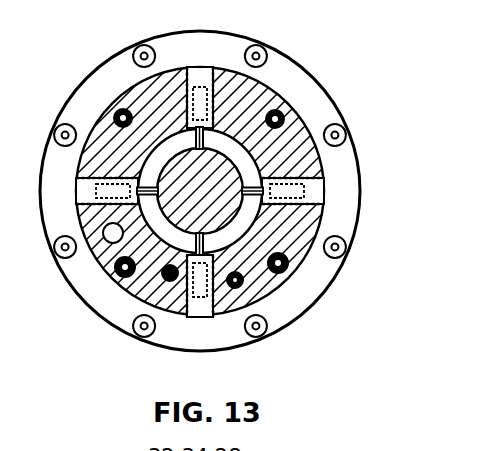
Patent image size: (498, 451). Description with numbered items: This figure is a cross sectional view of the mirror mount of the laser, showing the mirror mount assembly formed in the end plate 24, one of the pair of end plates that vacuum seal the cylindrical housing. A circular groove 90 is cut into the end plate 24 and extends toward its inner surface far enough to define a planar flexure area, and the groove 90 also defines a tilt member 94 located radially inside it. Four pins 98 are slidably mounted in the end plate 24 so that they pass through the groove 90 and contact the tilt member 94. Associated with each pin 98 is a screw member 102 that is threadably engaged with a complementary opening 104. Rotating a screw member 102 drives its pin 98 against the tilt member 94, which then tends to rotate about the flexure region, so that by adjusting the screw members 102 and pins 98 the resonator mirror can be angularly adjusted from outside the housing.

The end plate 24 is at (223, 347).
The circular groove 90 is at (236, 143).
The tilt member 94 is at (250, 227).
The pins 98 is at (154, 180).
The screw member 102 is at (326, 196).
The complementary opening 104 is at (200, 67).